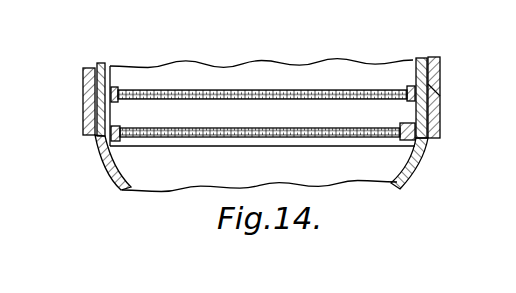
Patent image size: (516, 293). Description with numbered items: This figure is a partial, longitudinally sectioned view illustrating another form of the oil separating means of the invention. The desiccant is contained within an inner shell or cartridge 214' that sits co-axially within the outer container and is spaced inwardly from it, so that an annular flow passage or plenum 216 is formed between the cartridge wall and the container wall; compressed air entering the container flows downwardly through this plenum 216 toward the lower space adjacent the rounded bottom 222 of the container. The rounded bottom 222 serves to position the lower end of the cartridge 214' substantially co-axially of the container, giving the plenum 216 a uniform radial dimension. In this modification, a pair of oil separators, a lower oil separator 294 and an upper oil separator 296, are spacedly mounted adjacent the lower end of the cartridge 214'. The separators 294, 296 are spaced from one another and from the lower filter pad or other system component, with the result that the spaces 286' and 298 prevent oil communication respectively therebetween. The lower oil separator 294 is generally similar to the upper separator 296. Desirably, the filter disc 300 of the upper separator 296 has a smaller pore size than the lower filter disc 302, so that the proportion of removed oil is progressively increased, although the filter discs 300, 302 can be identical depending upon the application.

The cartridge 214' is at (461, 81).
The annular flow passage or plenum 216 is at (80, 95).
The rounded bottom 222 is at (102, 162).
The space 286' is at (261, 51).
The lower oil separator 294 is at (410, 122).
The upper oil separator 296 is at (416, 70).
The space 298 is at (353, 118).
The filter disc 300 is at (432, 90).
The lower filter disc 302 is at (418, 138).